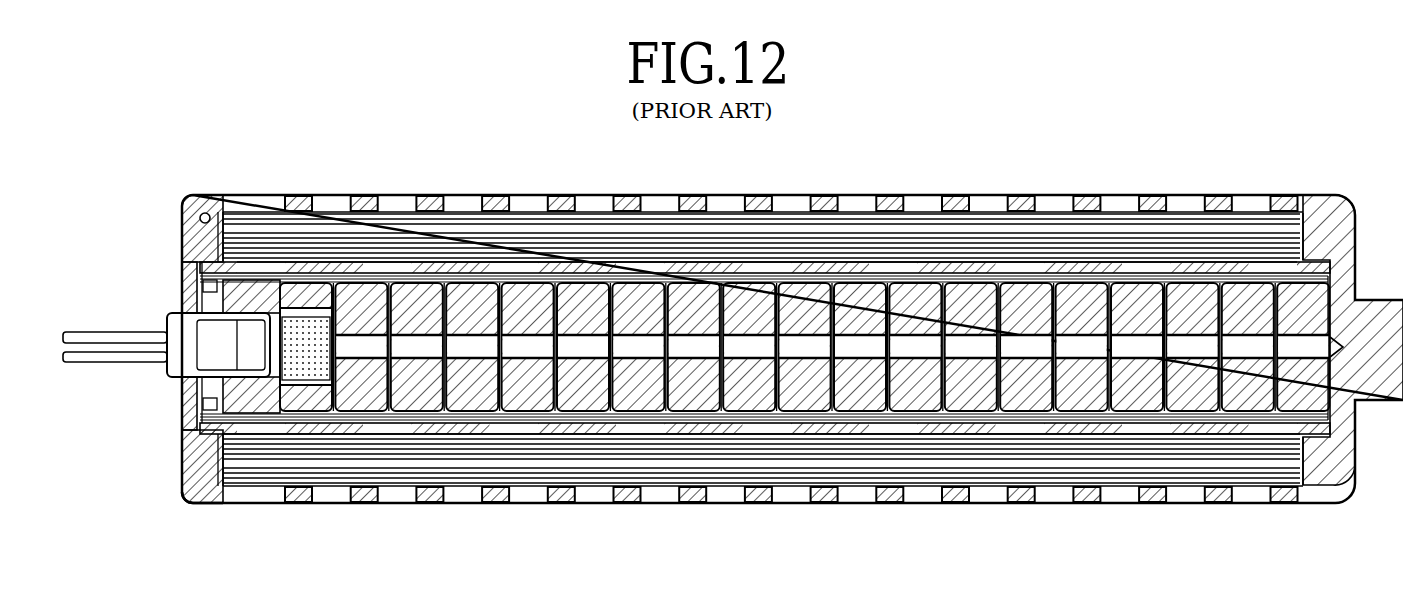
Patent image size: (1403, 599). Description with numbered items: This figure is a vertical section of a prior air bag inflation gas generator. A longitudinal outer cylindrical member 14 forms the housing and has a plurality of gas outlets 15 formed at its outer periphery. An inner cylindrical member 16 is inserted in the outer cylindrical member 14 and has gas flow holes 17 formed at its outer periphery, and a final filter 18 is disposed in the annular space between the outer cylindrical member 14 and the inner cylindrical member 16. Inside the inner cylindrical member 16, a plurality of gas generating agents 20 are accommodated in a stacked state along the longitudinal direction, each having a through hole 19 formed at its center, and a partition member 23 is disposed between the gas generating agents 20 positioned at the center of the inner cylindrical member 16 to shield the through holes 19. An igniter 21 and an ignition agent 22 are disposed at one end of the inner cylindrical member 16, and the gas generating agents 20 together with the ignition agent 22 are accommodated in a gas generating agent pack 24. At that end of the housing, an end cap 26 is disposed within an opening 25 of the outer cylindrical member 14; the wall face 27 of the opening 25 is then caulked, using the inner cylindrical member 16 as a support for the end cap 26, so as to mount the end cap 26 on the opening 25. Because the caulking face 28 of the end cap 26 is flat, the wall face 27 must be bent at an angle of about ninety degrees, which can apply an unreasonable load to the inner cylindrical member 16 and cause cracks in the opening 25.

The outer cylindrical member 14 is at (430, 200).
The gas outlets 15 is at (720, 202).
The inner cylindrical member 16 is at (310, 268).
The gas flow holes 17 is at (895, 268).
The final filter 18 is at (533, 248).
The through hole 19 is at (804, 420).
The gas generating agents 20 is at (527, 397).
The igniter 21 is at (183, 497).
The ignition agent 22 is at (314, 362).
The partition member 23 is at (763, 352).
The gas generating agent pack 24 is at (885, 428).
The opening 25 is at (205, 216).
The end cap 26 is at (192, 428).
The wall face 27 is at (193, 199).
The caulking face 28 is at (192, 475).